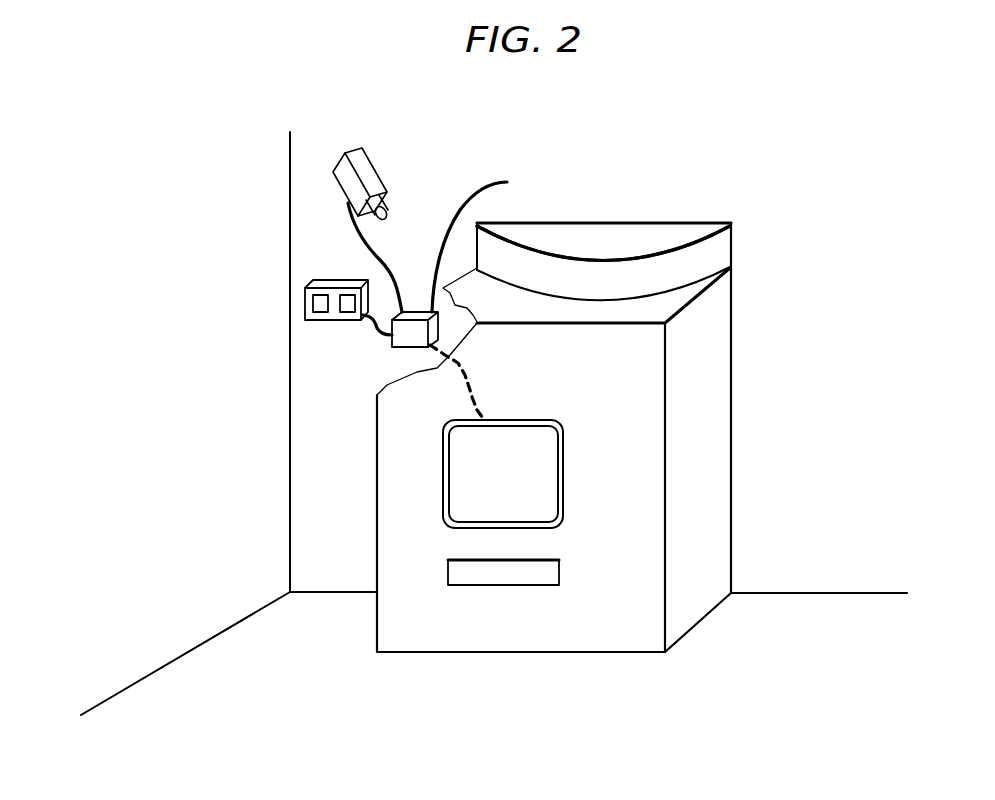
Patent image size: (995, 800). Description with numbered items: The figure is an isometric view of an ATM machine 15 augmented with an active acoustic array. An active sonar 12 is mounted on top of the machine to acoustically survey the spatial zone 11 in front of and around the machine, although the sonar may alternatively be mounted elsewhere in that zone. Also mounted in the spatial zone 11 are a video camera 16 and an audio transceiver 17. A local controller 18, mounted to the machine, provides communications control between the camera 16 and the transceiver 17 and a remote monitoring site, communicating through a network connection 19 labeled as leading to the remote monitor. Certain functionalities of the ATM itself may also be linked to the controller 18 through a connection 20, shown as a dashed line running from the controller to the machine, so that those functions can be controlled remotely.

The spatial zone 11 is at (347, 572).
The active sonar 12 is at (732, 243).
The ATM machine 15 is at (731, 440).
The video camera 16 is at (374, 168).
The audio transceiver 17 is at (303, 300).
The local controller 18 is at (403, 348).
The network connection 19 is at (476, 198).
The connection 20 is at (473, 397).